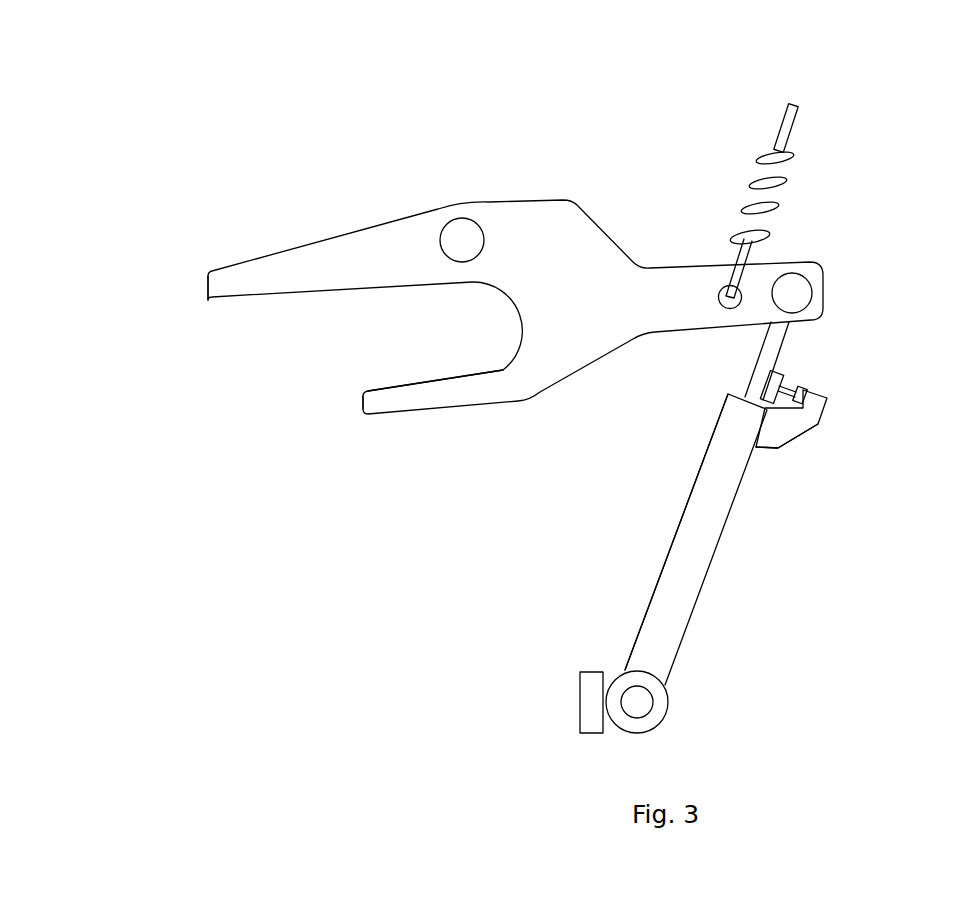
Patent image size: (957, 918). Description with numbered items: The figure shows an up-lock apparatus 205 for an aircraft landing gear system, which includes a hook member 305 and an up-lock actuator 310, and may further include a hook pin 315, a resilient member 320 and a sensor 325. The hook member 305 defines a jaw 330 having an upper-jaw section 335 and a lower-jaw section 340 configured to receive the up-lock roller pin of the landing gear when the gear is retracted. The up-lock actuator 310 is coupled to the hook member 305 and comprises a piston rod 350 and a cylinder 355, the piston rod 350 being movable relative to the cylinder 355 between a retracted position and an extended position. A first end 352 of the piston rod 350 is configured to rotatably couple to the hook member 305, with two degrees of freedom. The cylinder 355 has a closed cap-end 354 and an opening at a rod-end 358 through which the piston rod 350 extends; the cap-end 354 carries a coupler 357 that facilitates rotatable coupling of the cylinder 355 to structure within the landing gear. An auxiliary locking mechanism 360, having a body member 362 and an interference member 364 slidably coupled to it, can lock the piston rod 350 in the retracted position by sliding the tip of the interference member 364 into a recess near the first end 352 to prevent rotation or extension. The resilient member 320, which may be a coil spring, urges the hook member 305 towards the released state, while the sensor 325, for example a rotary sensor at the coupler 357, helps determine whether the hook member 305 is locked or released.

The up-lock apparatus 205 is at (236, 77).
The hook member 305 is at (315, 278).
The up-lock actuator 310 is at (718, 540).
The hook pin 315 is at (462, 228).
The resilient member 320 is at (778, 157).
The sensor 325 is at (583, 695).
The jaw 330 is at (234, 372).
The upper-jaw section 335 is at (258, 300).
The lower-jaw section 340 is at (402, 390).
The piston rod 350 is at (772, 360).
The first end 352 is at (818, 286).
The cap-end 354 is at (700, 679).
The cylinder 355 is at (667, 610).
The coupler 357 is at (637, 708).
The rod-end 358 is at (686, 438).
The auxiliary locking mechanism 360 is at (829, 405).
The body member 362 is at (792, 427).
The interference member 364 is at (785, 387).